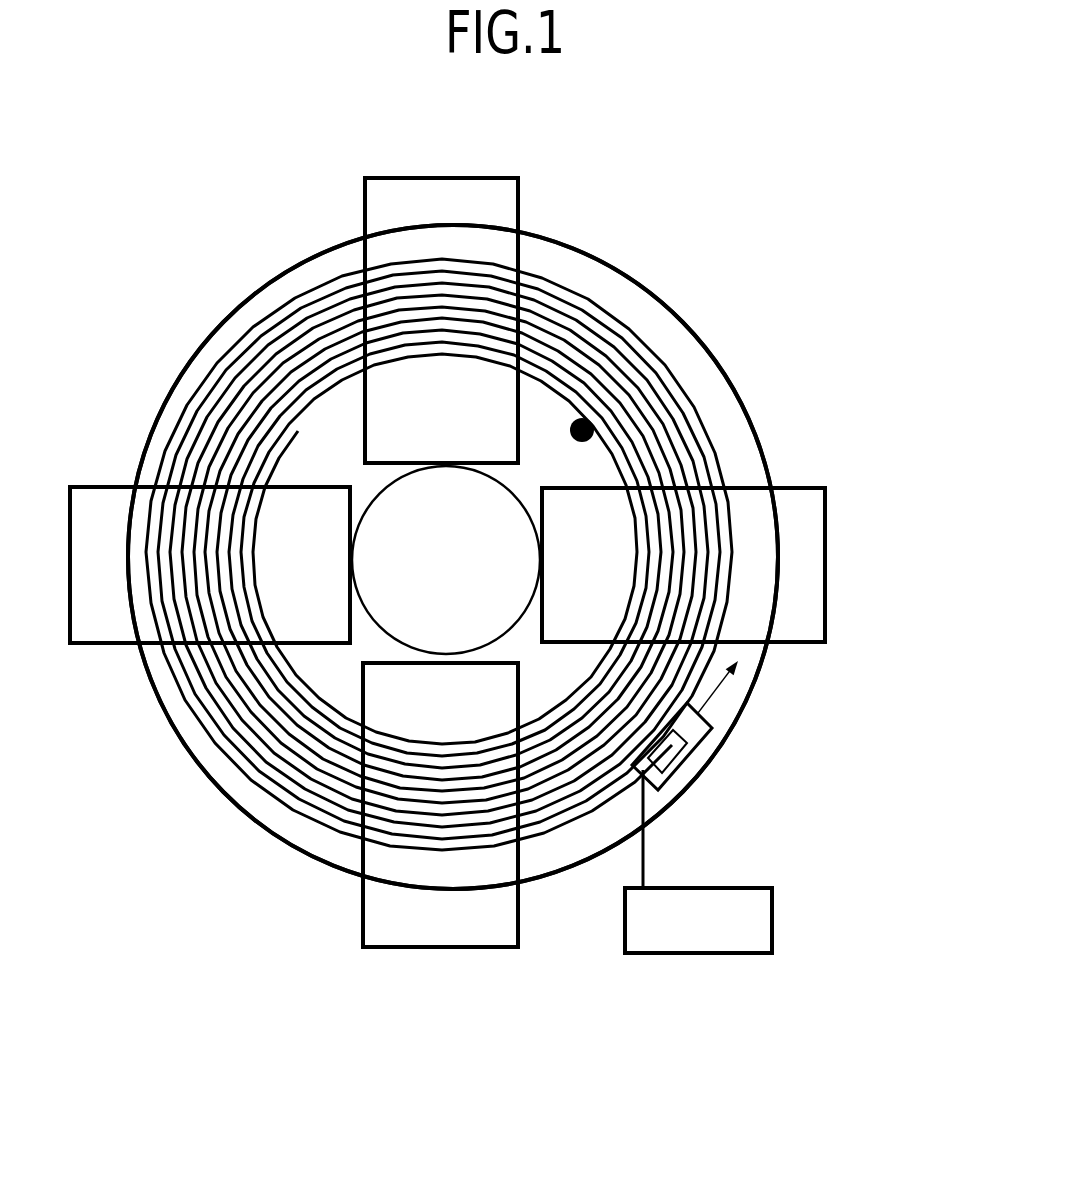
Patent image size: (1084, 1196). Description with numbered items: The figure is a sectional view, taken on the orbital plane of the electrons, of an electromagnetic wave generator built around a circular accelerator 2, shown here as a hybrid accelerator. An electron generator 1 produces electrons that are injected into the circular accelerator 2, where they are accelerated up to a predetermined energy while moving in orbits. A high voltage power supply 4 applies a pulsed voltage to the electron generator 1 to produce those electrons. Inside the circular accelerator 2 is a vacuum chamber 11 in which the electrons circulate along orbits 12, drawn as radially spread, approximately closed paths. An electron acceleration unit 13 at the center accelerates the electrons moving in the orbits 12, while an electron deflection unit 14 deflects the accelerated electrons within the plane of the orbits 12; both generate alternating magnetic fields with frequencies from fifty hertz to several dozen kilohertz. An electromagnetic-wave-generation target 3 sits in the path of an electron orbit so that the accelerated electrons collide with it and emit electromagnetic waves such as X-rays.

The electron generator 1 is at (702, 745).
The circular accelerator 2 is at (680, 315).
The electromagnetic-wave-generation target 3 is at (590, 426).
The high voltage power supply 4 is at (773, 922).
The vacuum chamber 11 is at (322, 843).
The orbits 12 is at (258, 743).
The electron acceleration unit 13 is at (367, 505).
The electron deflection unit 14 is at (797, 622).